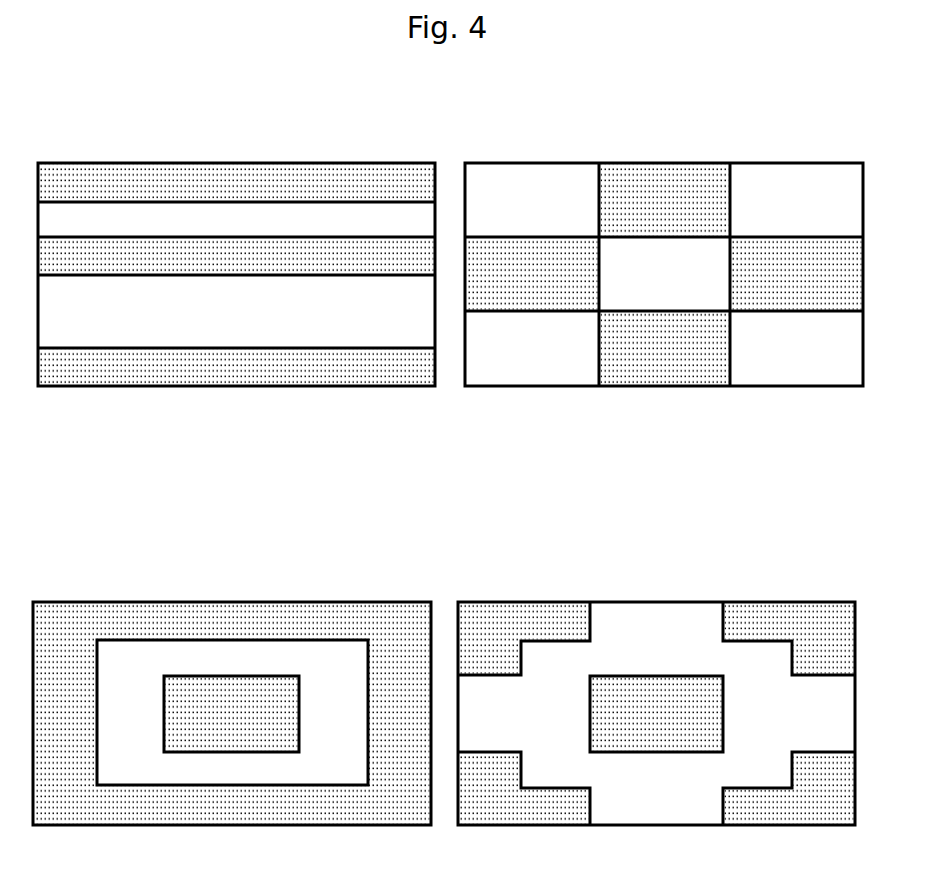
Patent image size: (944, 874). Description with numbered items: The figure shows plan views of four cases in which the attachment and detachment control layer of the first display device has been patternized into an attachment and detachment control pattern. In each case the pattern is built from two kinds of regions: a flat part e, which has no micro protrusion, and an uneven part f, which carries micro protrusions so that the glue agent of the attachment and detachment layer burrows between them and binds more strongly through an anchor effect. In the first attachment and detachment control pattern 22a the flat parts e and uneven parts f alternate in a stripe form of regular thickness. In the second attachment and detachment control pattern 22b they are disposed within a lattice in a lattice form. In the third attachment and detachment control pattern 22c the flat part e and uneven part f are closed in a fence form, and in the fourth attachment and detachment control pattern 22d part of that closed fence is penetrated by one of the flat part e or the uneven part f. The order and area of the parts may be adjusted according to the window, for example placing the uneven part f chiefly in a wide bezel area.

The first attachment and detachment control pattern 22a is at (431, 148).
The second attachment and detachment control pattern 22b is at (818, 148).
The third attachment and detachment control pattern 22c is at (375, 578).
The fourth attachment and detachment control pattern 22d is at (798, 578).
The flat part e is at (246, 195).
The uneven part f is at (232, 233).